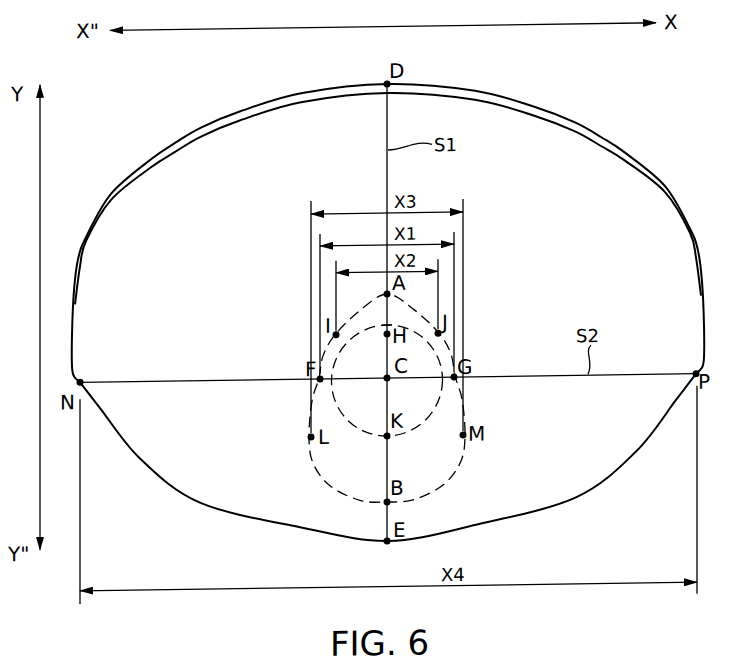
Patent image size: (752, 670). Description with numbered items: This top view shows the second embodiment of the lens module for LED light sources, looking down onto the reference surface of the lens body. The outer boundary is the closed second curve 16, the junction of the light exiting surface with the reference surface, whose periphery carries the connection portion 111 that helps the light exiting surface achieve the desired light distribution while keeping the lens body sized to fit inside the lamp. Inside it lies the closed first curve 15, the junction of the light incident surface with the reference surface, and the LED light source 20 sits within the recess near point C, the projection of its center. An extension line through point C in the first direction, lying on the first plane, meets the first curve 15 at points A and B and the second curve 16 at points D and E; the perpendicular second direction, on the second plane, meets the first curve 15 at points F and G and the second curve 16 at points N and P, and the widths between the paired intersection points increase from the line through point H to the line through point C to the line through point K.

The connection portion 111 is at (533, 110).
The first curve 15 is at (455, 469).
The second curve 16 is at (603, 480).
The LED light source 20 is at (459, 396).